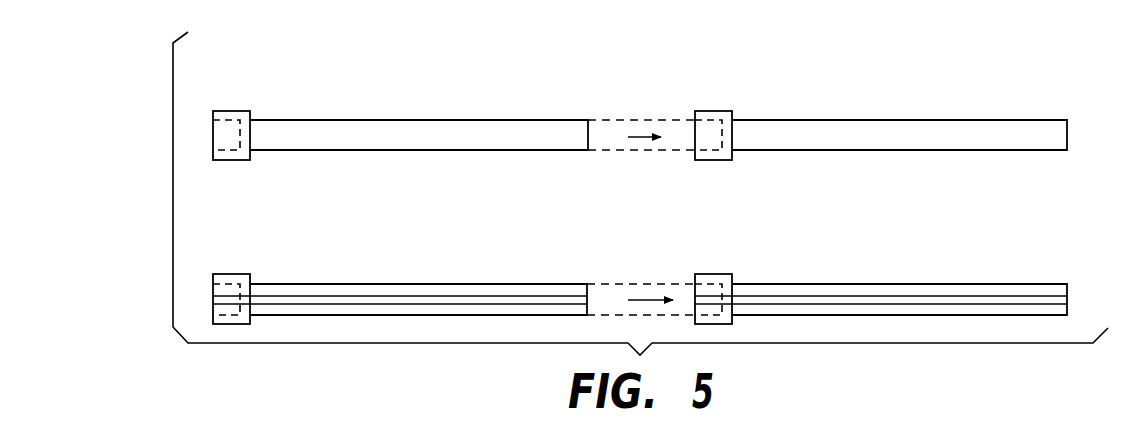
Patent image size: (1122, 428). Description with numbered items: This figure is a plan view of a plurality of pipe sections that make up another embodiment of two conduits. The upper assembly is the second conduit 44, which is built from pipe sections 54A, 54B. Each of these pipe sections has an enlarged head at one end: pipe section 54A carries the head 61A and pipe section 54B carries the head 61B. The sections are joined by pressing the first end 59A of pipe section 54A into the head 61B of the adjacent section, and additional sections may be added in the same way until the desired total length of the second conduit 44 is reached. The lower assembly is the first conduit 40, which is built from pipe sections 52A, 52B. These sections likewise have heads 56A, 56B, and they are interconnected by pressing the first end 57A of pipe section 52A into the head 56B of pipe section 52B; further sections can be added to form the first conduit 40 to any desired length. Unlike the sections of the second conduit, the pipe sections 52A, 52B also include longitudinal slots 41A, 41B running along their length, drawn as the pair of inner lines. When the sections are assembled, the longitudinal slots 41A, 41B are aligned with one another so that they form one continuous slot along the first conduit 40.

The second conduit 44 is at (289, 80).
The head 61A is at (222, 110).
The pipe section 54A is at (395, 130).
The first end 59A is at (563, 130).
The head 61B is at (708, 110).
The pipe section 54B is at (878, 130).
The first conduit 40 is at (289, 242).
The head 56A is at (222, 273).
The pipe section 52A is at (395, 290).
The longitudinal slot 41A is at (478, 300).
The first end 57A is at (563, 290).
The head 56B is at (708, 273).
The pipe section 52B is at (878, 292).
The longitudinal slot 41B is at (964, 300).